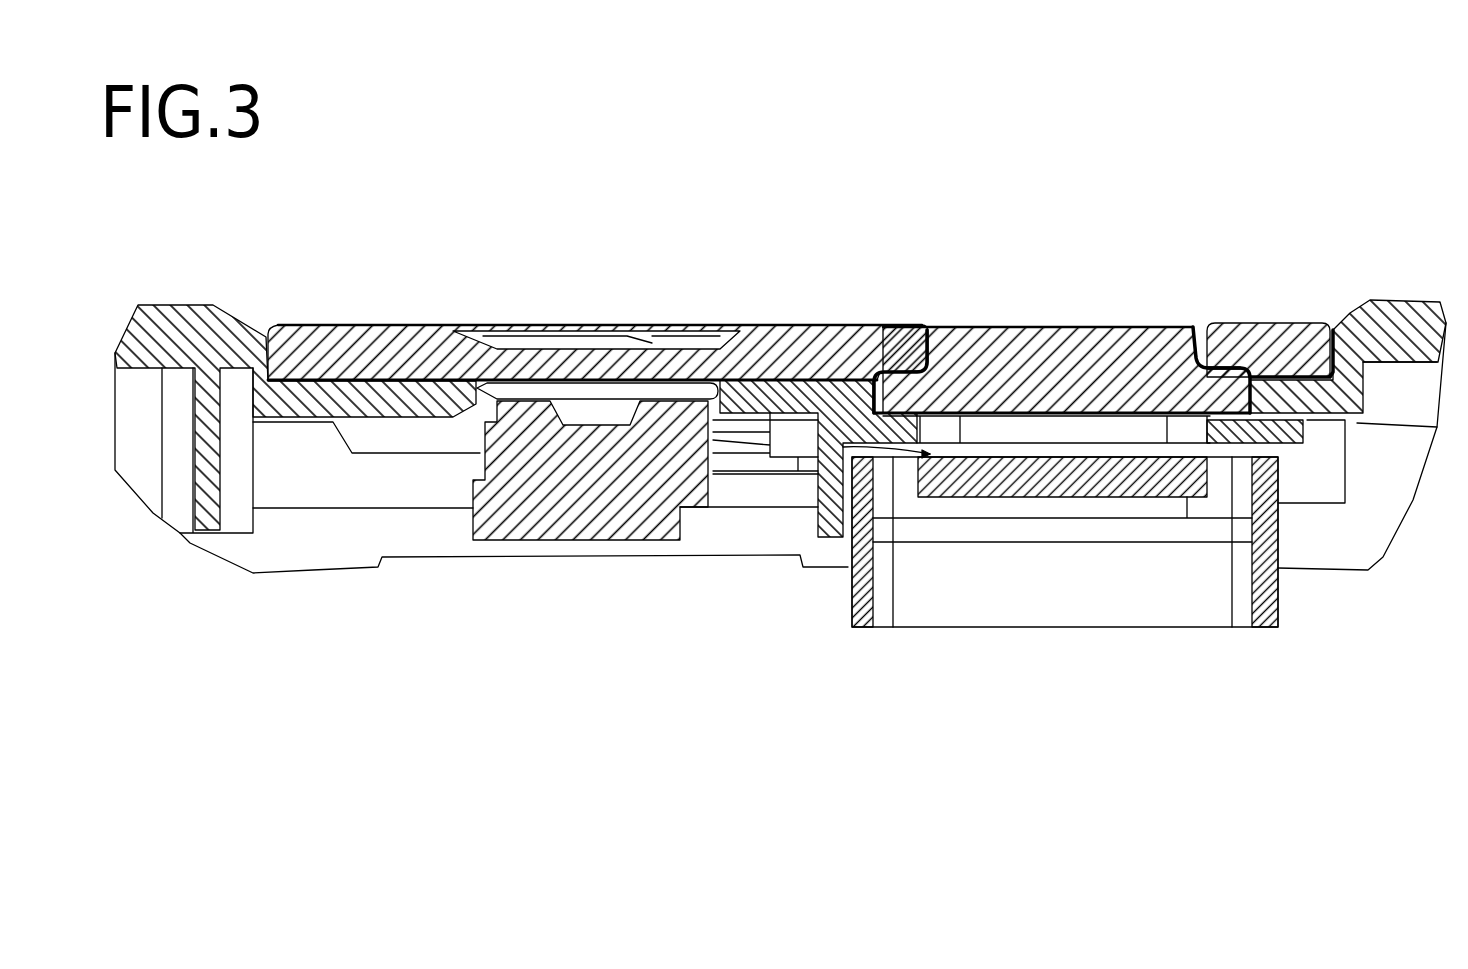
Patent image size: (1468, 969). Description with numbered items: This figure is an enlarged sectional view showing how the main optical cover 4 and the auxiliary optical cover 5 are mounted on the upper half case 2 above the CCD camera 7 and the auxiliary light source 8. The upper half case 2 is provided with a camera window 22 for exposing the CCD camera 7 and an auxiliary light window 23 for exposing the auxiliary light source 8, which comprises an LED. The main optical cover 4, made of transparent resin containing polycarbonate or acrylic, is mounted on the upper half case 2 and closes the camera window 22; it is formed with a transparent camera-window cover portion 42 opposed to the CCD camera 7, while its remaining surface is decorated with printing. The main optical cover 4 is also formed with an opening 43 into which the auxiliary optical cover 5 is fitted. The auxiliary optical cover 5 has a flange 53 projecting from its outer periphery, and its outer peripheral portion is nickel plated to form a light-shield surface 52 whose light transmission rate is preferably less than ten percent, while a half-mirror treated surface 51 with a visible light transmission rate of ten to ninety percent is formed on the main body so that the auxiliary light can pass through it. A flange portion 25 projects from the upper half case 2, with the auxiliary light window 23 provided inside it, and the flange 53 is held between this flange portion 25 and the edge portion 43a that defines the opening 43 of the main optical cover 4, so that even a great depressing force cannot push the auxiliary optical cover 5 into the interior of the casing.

The upper half case 2 is at (170, 327).
The main optical cover 4 is at (377, 323).
The camera window 22 is at (497, 380).
The camera-window cover portion 42 is at (598, 362).
The light-shield surface 52 is at (917, 350).
The half-mirror treated surface 51 is at (1004, 327).
The auxiliary optical cover 5 is at (1080, 343).
The opening 43 is at (1178, 325).
The edge portion 43a is at (1222, 390).
The flange 53 is at (1300, 323).
The CCD camera 7 is at (590, 517).
The auxiliary light source 8 is at (1113, 492).
The auxiliary light window 23 is at (1203, 423).
The flange portion 25 is at (1243, 433).